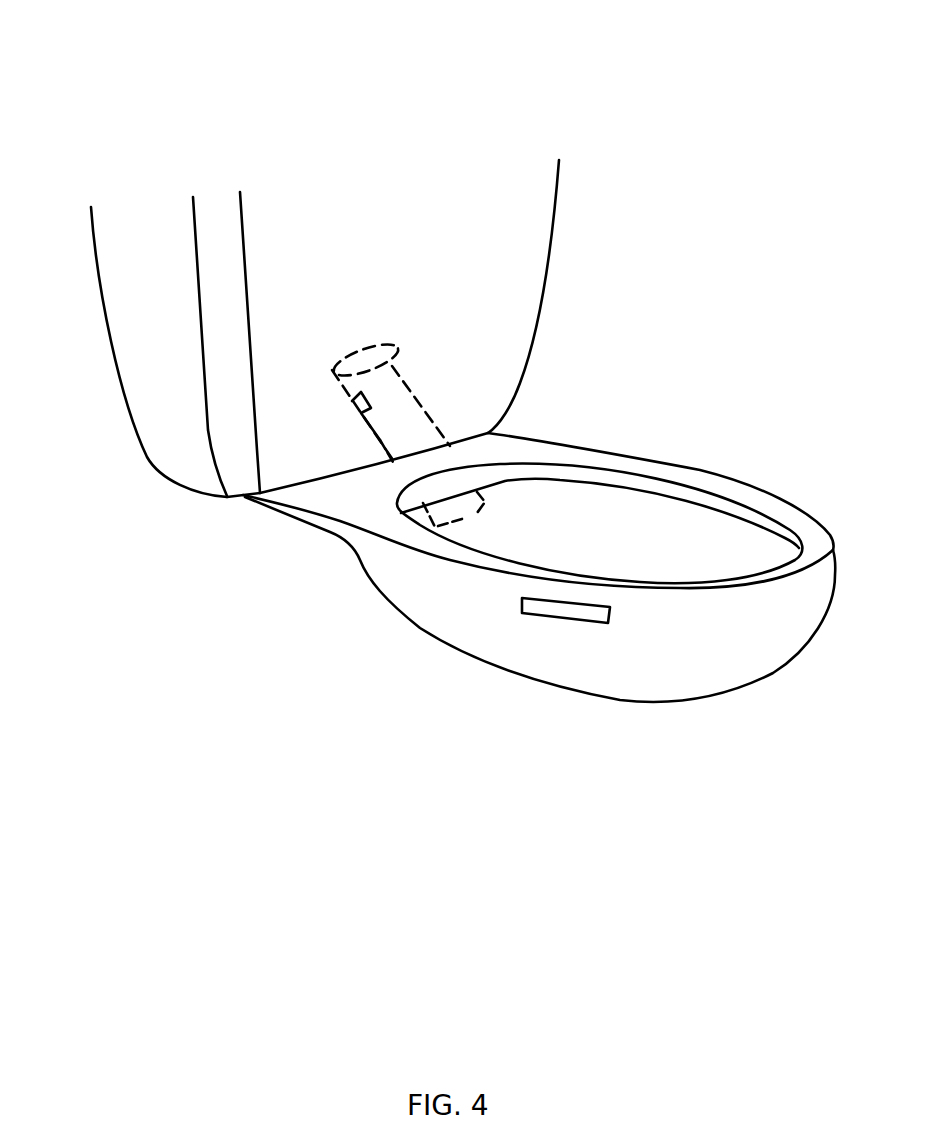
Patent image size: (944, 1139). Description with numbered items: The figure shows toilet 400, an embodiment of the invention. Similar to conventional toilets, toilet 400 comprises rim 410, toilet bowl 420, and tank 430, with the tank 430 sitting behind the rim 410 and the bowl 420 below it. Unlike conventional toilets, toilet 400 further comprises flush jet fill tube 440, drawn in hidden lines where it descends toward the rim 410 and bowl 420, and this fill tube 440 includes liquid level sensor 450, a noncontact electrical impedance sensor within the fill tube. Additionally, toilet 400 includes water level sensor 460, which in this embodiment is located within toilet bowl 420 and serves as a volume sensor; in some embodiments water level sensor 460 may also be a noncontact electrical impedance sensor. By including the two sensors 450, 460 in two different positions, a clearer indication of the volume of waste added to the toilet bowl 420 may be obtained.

The toilet 400 is at (146, 45).
The rim 410 is at (792, 518).
The toilet bowl 420 is at (705, 565).
The tank 430 is at (535, 295).
The flush jet fill tube 440 is at (394, 366).
The liquid level sensor 450 is at (353, 402).
The water level sensor 460 is at (538, 608).